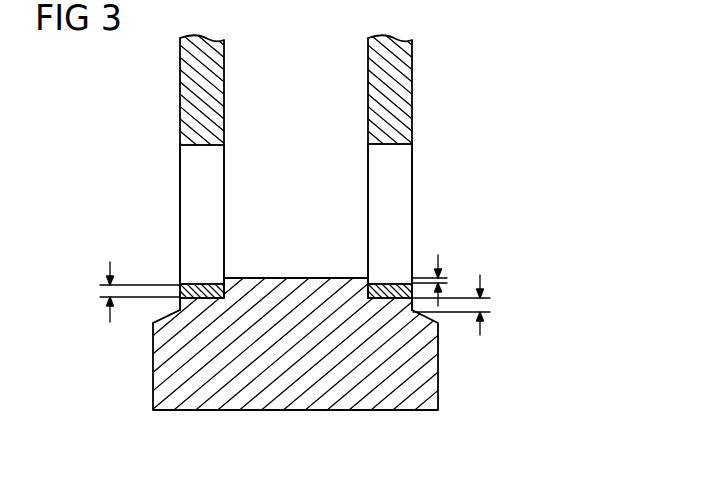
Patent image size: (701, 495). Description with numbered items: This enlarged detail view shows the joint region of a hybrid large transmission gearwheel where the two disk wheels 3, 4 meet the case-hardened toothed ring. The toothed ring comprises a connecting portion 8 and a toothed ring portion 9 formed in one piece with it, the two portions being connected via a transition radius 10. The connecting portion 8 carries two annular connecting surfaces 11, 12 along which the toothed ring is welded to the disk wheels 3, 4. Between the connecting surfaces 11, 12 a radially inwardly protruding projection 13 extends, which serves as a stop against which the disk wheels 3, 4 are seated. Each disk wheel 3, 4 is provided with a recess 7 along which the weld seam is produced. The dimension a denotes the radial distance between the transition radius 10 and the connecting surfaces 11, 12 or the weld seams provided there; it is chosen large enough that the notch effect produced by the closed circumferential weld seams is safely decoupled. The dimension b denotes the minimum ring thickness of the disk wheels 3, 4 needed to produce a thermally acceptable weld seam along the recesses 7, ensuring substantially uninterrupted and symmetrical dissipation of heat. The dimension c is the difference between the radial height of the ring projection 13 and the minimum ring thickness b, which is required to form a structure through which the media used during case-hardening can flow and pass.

The disk wheel 3 is at (190, 97).
The disk wheel 4 is at (402, 100).
The recess 7 is at (190, 203).
The connecting portion 8 is at (570, 277).
The toothed ring portion 9 is at (570, 317).
The transition radius 10 is at (181, 311).
The connecting surface 11 is at (194, 300).
The connecting surface 12 is at (386, 300).
The projection 13 is at (299, 278).
The dimension a is at (492, 302).
The dimension b is at (100, 291).
The dimension c is at (447, 279).